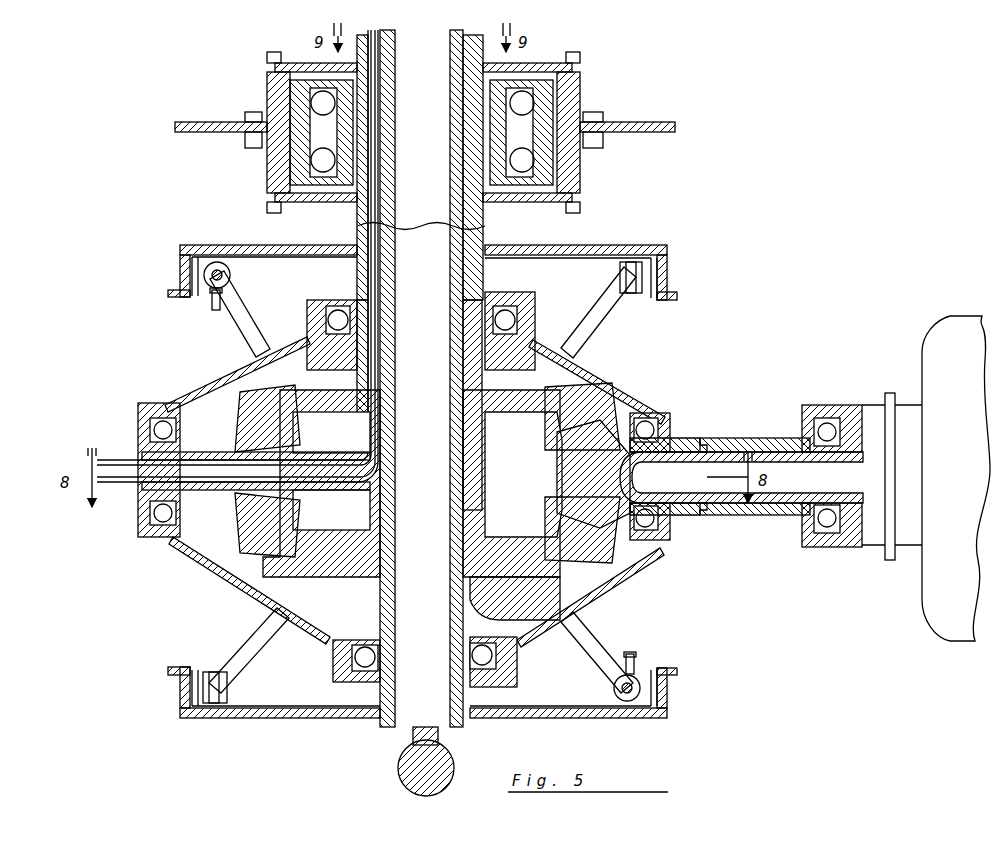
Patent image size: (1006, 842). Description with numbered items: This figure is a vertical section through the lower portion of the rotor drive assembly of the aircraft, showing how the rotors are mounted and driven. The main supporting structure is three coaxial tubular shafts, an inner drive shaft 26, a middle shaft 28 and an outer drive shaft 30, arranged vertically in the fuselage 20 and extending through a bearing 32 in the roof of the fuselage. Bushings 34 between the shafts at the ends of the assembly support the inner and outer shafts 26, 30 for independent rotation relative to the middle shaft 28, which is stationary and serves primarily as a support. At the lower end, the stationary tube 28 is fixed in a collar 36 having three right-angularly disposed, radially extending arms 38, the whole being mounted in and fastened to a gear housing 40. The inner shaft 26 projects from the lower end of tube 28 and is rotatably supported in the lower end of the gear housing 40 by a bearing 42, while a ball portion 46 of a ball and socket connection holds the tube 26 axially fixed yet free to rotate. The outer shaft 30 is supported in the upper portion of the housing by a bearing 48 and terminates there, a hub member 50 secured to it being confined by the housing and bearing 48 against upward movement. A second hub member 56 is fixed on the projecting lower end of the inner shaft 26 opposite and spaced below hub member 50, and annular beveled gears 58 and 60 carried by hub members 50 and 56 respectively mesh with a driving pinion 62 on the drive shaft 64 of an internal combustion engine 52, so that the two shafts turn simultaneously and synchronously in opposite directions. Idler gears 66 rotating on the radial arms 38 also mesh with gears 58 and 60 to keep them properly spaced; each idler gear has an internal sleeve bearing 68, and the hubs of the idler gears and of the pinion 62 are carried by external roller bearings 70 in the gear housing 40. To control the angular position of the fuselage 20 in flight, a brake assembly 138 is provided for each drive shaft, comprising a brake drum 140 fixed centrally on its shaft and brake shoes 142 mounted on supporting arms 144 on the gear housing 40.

The fuselage 20 is at (630, 122).
The inner drive shaft 26 is at (463, 527).
The middle shaft 28 is at (470, 433).
The outer drive shaft 30 is at (500, 243).
The bearing 32 is at (530, 65).
The bushings 34 is at (483, 350).
The collar 36 is at (365, 438).
The radially extending arms 38 is at (140, 455).
The gear housing 40 is at (235, 375).
The bearing 42 is at (362, 647).
The ball portion 46 is at (400, 765).
The bearing 48 is at (513, 312).
The hub member 50 is at (590, 375).
The internal combustion engine 52 is at (922, 355).
The hub member 56 is at (485, 580).
The annular beveled gear 58 is at (605, 393).
The annular beveled gear 60 is at (620, 560).
The driving pinion 62 is at (557, 482).
The drive shaft 64 is at (700, 455).
The idler gears 66 is at (240, 520).
The internal sleeve bearing 68 is at (150, 420).
The external roller bearings 70 is at (170, 422).
The brake assembly 138 is at (195, 246).
The brake drum 140 is at (188, 272).
The brake shoes 142 is at (205, 300).
The supporting arms 144 is at (250, 326).